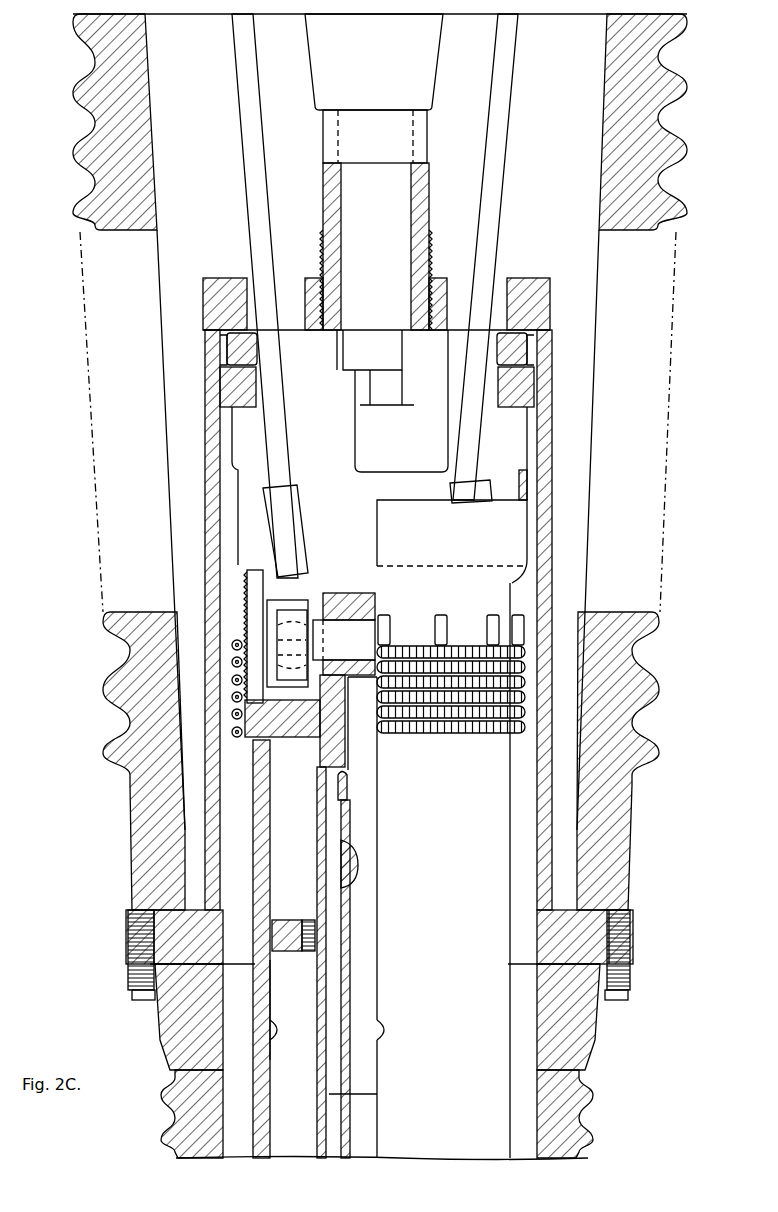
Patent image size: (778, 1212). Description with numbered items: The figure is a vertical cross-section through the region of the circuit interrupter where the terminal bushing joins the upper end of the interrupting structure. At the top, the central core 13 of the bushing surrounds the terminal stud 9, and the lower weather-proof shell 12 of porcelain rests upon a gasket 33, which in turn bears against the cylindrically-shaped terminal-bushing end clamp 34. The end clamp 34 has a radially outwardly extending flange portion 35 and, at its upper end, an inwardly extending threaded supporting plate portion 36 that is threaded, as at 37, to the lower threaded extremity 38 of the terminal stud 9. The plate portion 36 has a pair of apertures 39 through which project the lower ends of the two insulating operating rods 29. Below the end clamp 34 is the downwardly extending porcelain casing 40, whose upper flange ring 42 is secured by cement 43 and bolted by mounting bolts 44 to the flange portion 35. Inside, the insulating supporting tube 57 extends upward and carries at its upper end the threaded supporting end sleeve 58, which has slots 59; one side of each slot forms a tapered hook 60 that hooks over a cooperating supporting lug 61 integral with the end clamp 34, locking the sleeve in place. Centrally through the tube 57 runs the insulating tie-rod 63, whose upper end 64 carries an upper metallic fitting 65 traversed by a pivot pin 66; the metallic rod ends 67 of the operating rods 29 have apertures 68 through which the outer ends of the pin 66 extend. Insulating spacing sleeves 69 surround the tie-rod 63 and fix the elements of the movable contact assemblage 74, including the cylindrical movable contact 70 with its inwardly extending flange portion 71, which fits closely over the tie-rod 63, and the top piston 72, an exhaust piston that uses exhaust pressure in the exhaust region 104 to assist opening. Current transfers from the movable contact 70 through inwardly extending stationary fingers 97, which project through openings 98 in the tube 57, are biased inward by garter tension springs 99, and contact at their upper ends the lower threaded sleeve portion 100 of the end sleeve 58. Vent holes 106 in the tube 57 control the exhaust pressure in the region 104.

The terminal stud 9 is at (410, 147).
The lower weather-proof shell 12 is at (678, 148).
The central core 13 is at (430, 48).
The insulating operating rods 29 is at (238, 90).
The gasket 33 is at (634, 915).
The terminal-bushing end clamp 34 is at (582, 535).
The flange portion 35 is at (640, 941).
The threaded supporting plate portion 36 is at (440, 286).
The threads 37 is at (320, 252).
The lower threaded extremity 38 is at (428, 196).
The apertures 39 is at (245, 280).
The cylindrical casing 40 is at (598, 1108).
The flange rings 42 is at (638, 966).
The cement 43 is at (588, 1064).
The mounting bolts 44 is at (141, 1002).
The insulating supporting tube 57 is at (510, 1096).
The supporting end sleeve 58 is at (528, 514).
The slots 59 is at (224, 466).
The tapered hook 60 is at (228, 342).
The supporting lug 61 is at (241, 397).
The insulating tie-rod 63 is at (364, 770).
The upper end of tie-rod 64 is at (368, 812).
The upper metallic fitting 65 is at (342, 593).
The pivot pin 66 is at (358, 647).
The metallic rod ends 67 is at (306, 502).
The apertures 68 is at (291, 622).
The insulating spacing sleeves 69 is at (351, 976).
The movable contact 70 is at (317, 882).
The flange portion 71 is at (348, 784).
The piston 72 is at (280, 952).
The movable contact assemblage 74 is at (378, 1094).
The stationary fingers 97 is at (383, 622).
The openings 98 is at (265, 764).
The garter tension springs 99 is at (233, 643).
The lower threaded sleeve portion 100 is at (247, 600).
The exhaust region 104 is at (304, 1020).
The vent holes 106 is at (278, 1038).